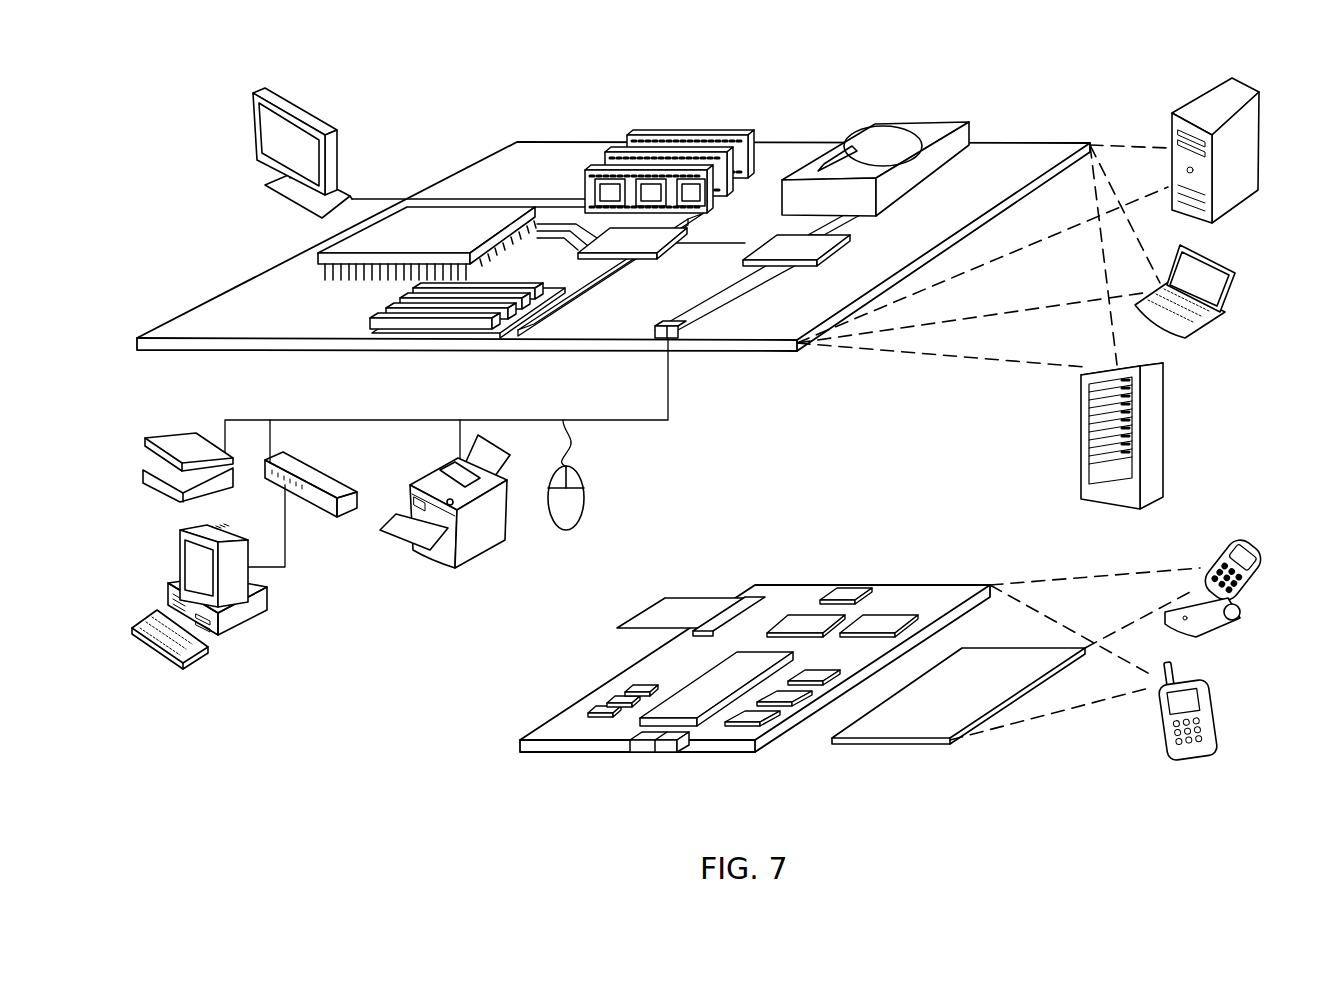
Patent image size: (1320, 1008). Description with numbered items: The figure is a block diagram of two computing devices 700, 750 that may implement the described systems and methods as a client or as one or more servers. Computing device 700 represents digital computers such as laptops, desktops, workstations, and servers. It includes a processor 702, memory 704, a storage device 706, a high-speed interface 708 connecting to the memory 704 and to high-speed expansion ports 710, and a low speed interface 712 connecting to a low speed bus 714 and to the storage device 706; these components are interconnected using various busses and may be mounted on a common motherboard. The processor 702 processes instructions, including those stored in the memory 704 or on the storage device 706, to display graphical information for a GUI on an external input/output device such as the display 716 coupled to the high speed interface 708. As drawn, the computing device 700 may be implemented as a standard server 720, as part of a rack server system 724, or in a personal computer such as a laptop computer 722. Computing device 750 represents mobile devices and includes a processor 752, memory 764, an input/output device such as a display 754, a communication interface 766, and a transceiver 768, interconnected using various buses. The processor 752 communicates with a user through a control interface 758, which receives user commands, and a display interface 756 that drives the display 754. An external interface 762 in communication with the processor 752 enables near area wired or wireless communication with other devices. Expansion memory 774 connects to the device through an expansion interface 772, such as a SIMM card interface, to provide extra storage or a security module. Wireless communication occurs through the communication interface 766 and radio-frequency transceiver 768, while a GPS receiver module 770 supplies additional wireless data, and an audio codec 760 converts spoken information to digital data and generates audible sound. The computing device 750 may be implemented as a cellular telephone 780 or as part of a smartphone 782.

The computing device 700 is at (438, 112).
The processor 702 is at (318, 256).
The memory 704 is at (648, 137).
The storage device 706 is at (868, 130).
The high-speed interface 708 is at (600, 243).
The high-speed expansion ports 710 is at (393, 313).
The low speed interface 712 is at (778, 243).
The low speed bus 714 is at (683, 346).
The display 716 is at (253, 92).
The standard server 720 is at (1172, 140).
The laptop computer 722 is at (1235, 272).
The rack server system 724 is at (1082, 452).
The computing device 750 is at (490, 752).
The processor 752 is at (692, 710).
The display 754 is at (918, 728).
The display interface 756 is at (760, 722).
The control interface 758 is at (800, 700).
The audio codec 760 is at (815, 681).
The external interface 762 is at (657, 748).
The memory 764 is at (620, 700).
The communication interface 766 is at (807, 622).
The transceiver 768 is at (878, 620).
The GPS receiver module 770 is at (858, 592).
The expansion interface 772 is at (727, 600).
The expansion memory 774 is at (655, 598).
The cellular telephone 780 is at (1220, 545).
The smartphone 782 is at (1163, 720).